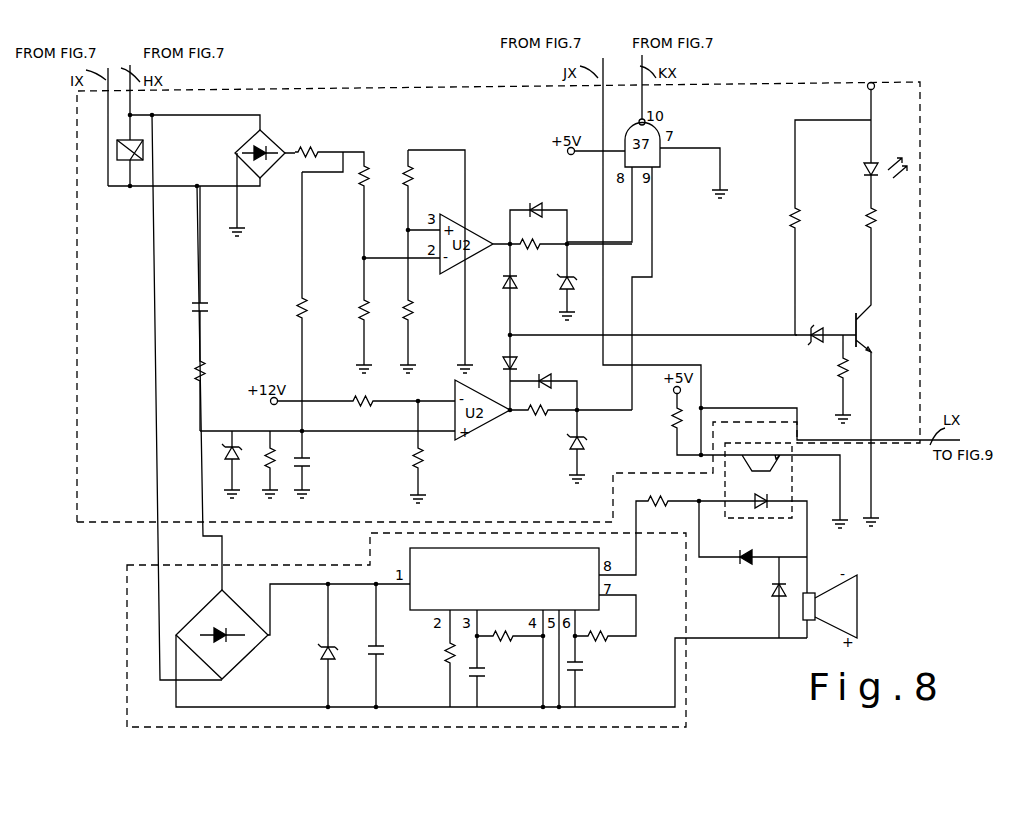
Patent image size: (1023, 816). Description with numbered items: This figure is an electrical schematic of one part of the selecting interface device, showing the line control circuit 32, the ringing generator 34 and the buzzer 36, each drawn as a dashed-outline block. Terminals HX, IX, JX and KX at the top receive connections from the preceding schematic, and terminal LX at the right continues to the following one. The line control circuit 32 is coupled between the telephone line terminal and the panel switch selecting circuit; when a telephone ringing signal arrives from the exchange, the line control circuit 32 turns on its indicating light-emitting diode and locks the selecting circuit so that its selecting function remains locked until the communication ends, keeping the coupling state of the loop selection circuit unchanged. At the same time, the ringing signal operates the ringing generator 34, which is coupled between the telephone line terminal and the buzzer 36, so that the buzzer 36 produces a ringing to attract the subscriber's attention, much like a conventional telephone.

The line control circuit 32 is at (820, 80).
The ringing generator 34 is at (127, 612).
The buzzer 36 is at (857, 604).